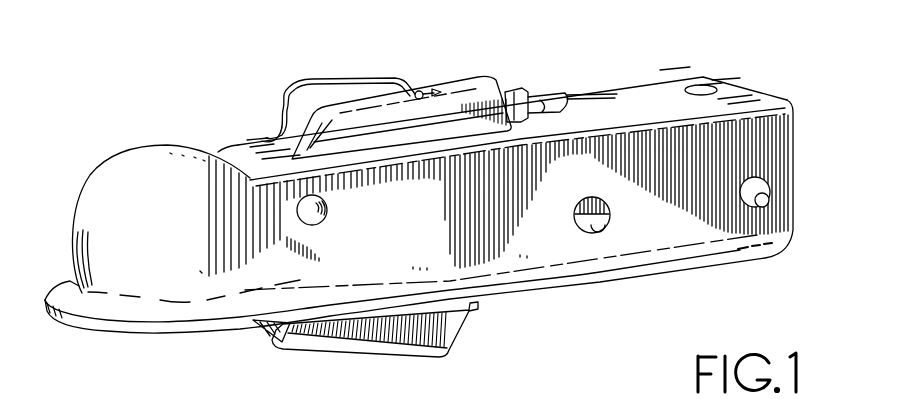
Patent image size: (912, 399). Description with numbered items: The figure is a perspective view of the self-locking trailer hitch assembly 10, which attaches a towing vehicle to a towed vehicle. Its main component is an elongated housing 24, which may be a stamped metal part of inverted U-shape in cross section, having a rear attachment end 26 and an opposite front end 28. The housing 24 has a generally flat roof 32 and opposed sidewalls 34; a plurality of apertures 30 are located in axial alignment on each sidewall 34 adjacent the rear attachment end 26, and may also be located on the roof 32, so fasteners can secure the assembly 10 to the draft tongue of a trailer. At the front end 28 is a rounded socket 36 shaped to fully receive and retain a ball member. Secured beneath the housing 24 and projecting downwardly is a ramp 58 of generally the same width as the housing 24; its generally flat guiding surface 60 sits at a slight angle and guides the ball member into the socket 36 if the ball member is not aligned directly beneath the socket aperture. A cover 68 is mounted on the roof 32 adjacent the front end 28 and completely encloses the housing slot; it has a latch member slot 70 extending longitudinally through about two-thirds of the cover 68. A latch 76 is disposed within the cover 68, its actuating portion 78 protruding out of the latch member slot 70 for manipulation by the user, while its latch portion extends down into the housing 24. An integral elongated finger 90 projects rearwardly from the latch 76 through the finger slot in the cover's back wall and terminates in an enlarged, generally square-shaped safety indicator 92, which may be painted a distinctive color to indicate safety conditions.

The self-locking trailer hitch assembly 10 is at (152, 94).
The housing 24 is at (712, 62).
The rear attachment end 26 is at (469, 182).
The front end 28 is at (58, 190).
The apertures 30 is at (572, 100).
The roof 32 is at (646, 99).
The sidewalls 34 is at (674, 222).
The socket 36 is at (112, 156).
The ramp 58 is at (458, 341).
The guiding surface 60 is at (262, 332).
The cover 68 is at (384, 83).
The latch member slot 70 is at (420, 90).
The latch 76 is at (327, 96).
The actuating portion 78 is at (298, 82).
The finger 90 is at (511, 96).
The safety indicator 92 is at (538, 108).